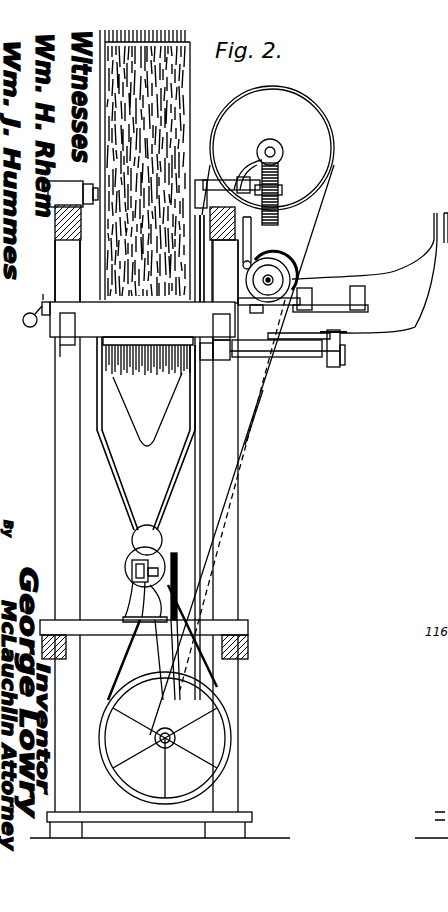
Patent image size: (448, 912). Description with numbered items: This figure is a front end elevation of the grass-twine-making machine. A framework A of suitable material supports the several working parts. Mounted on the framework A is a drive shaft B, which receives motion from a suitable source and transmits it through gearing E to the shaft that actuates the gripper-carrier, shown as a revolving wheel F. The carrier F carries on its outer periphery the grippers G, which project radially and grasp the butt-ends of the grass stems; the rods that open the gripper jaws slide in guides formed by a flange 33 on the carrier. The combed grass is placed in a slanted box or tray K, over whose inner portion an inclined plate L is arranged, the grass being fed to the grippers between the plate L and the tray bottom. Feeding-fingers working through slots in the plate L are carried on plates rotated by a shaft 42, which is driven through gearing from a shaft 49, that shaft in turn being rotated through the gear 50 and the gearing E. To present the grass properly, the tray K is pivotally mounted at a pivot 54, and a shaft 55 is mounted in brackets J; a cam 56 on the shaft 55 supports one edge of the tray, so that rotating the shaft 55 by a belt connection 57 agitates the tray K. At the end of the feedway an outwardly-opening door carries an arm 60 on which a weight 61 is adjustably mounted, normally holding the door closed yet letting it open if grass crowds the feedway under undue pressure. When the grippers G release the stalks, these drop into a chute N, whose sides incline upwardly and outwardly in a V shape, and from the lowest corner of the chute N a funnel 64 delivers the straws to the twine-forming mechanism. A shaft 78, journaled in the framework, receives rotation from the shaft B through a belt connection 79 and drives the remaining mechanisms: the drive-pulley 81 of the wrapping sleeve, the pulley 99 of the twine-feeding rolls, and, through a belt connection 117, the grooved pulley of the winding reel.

The framework A is at (60, 460).
The shaft B is at (282, 148).
The gearing E is at (279, 170).
The revolving wheel F is at (185, 88).
The grippers G is at (177, 140).
The brackets J is at (237, 327).
The tray K is at (224, 183).
The plate L is at (276, 262).
The chute N is at (125, 478).
The flange 33 is at (77, 270).
The shaft 42 is at (295, 278).
The shaft 49 is at (290, 262).
The gear 50 is at (216, 181).
The pivot 54 is at (312, 300).
The shaft 55 is at (306, 354).
The cam 56 is at (340, 357).
The belt connection 57 is at (204, 274).
The arm 60 is at (40, 300).
The weight 61 is at (27, 310).
The funnel 64 is at (133, 537).
The shaft 78 is at (178, 736).
The belt connection 79 is at (247, 423).
The drive-pulley 81 is at (132, 569).
The pulley 99 is at (176, 555).
The belt connection 117 is at (162, 650).